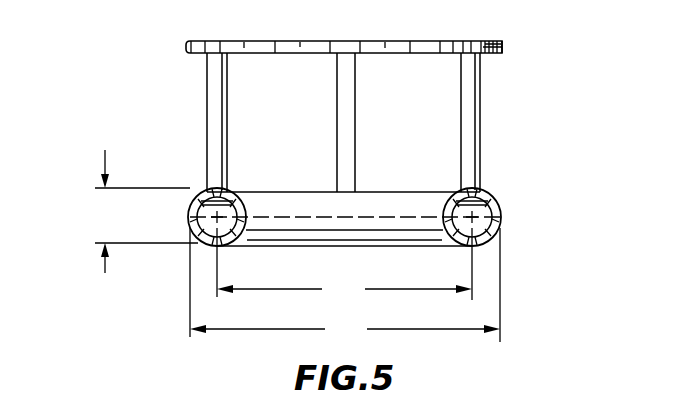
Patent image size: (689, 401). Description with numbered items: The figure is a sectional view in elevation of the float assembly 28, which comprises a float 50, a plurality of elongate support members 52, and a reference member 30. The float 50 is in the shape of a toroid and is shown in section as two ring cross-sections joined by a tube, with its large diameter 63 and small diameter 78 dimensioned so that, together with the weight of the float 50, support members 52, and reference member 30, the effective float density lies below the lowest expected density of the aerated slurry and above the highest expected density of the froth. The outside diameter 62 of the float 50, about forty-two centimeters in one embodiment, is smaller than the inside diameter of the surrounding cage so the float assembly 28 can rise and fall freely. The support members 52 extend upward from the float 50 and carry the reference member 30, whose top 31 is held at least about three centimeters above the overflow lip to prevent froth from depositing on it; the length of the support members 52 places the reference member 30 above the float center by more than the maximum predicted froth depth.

The float assembly 28 is at (164, 25).
The reference member 30 is at (386, 32).
The top of reference member 31 is at (478, 41).
The elongate support members 52 is at (460, 130).
The float 50 is at (506, 200).
The small diameter of float 78 is at (146, 211).
The large diameter of float 63 is at (344, 266).
The outside diameter of float 62 is at (345, 286).